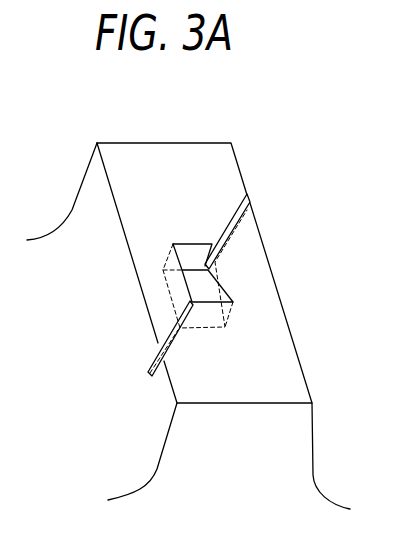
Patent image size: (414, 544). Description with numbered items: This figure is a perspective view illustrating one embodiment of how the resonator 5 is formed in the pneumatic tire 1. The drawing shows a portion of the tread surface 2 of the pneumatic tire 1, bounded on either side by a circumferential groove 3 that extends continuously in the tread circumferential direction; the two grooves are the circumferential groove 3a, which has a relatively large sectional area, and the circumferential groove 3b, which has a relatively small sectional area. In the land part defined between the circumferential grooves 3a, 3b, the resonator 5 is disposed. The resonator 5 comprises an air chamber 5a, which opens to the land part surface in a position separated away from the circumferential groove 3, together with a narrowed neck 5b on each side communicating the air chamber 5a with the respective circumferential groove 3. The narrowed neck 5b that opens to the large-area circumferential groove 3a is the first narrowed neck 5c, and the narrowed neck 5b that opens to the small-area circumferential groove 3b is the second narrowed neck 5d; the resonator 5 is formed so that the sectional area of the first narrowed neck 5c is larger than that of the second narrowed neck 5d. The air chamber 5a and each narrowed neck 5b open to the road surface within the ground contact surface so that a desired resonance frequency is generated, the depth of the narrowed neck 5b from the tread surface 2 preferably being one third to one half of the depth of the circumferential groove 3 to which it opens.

The pneumatic tire 1 is at (233, 120).
The tread surface 2 is at (243, 161).
The circumferential groove 3 is at (206, 326).
The circumferential groove 3a is at (385, 470).
The circumferential groove 3b is at (82, 348).
The resonator 5 is at (366, 240).
The air chamber 5a is at (200, 288).
The narrowed neck 5b is at (255, 285).
The first narrowed neck 5c is at (226, 231).
The second narrowed neck 5d is at (173, 332).